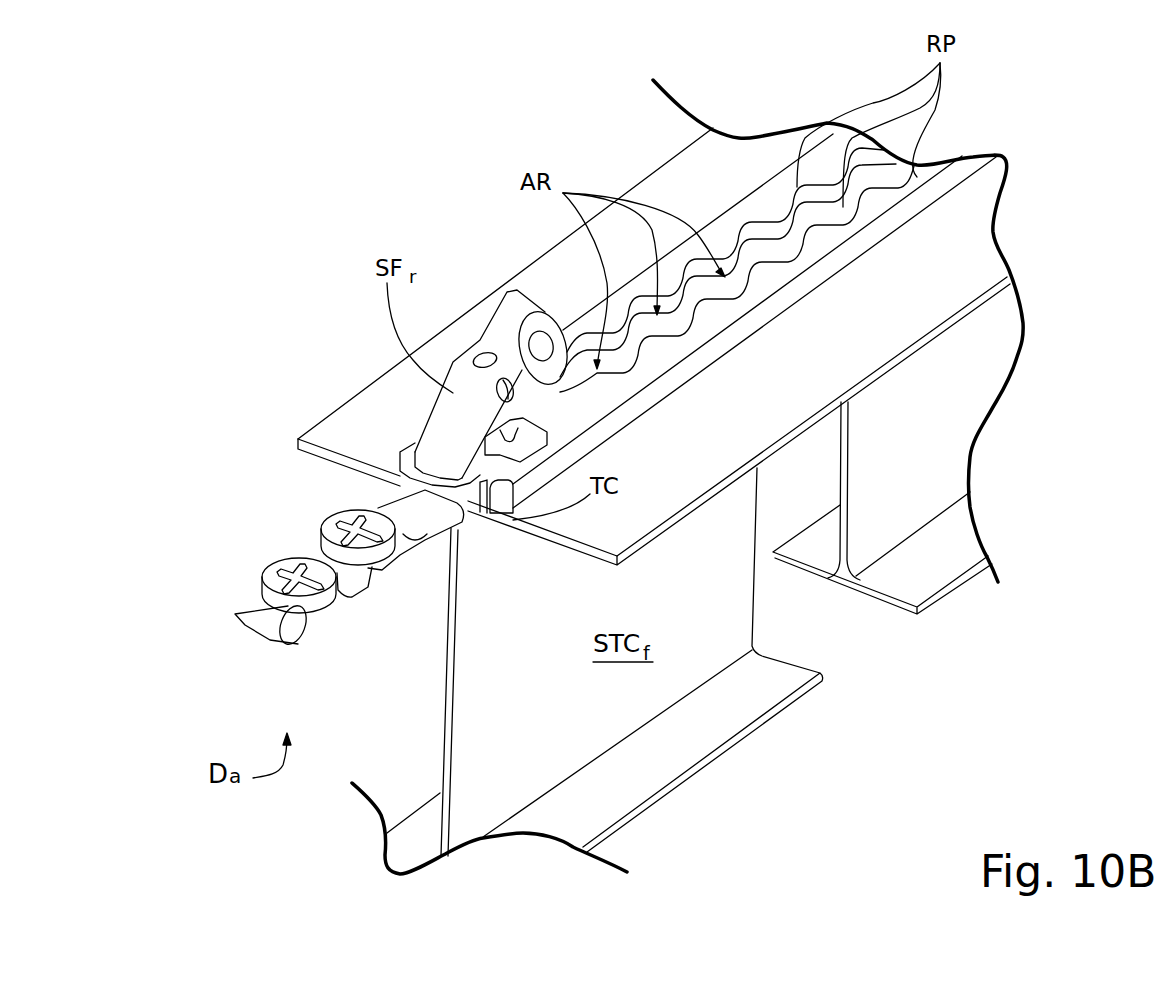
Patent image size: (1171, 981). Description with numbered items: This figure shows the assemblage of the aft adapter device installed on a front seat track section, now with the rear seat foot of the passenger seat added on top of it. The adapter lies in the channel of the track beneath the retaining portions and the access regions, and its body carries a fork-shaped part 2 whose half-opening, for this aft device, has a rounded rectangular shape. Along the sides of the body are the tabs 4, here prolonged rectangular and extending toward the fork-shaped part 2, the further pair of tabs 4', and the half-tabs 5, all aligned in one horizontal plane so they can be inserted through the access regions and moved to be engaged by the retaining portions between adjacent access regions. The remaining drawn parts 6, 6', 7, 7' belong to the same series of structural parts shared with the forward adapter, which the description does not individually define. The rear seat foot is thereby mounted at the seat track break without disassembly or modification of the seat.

The fork-shaped part 2 is at (470, 502).
The semi-circular tabs 4 is at (416, 556).
The semi-circular tabs 4' is at (361, 631).
The half-tabs 5 is at (257, 630).
The screw head 6 is at (336, 528).
The second screw head 6' is at (259, 577).
The cross recess 7 is at (324, 502).
The second cross recess 7' is at (262, 550).